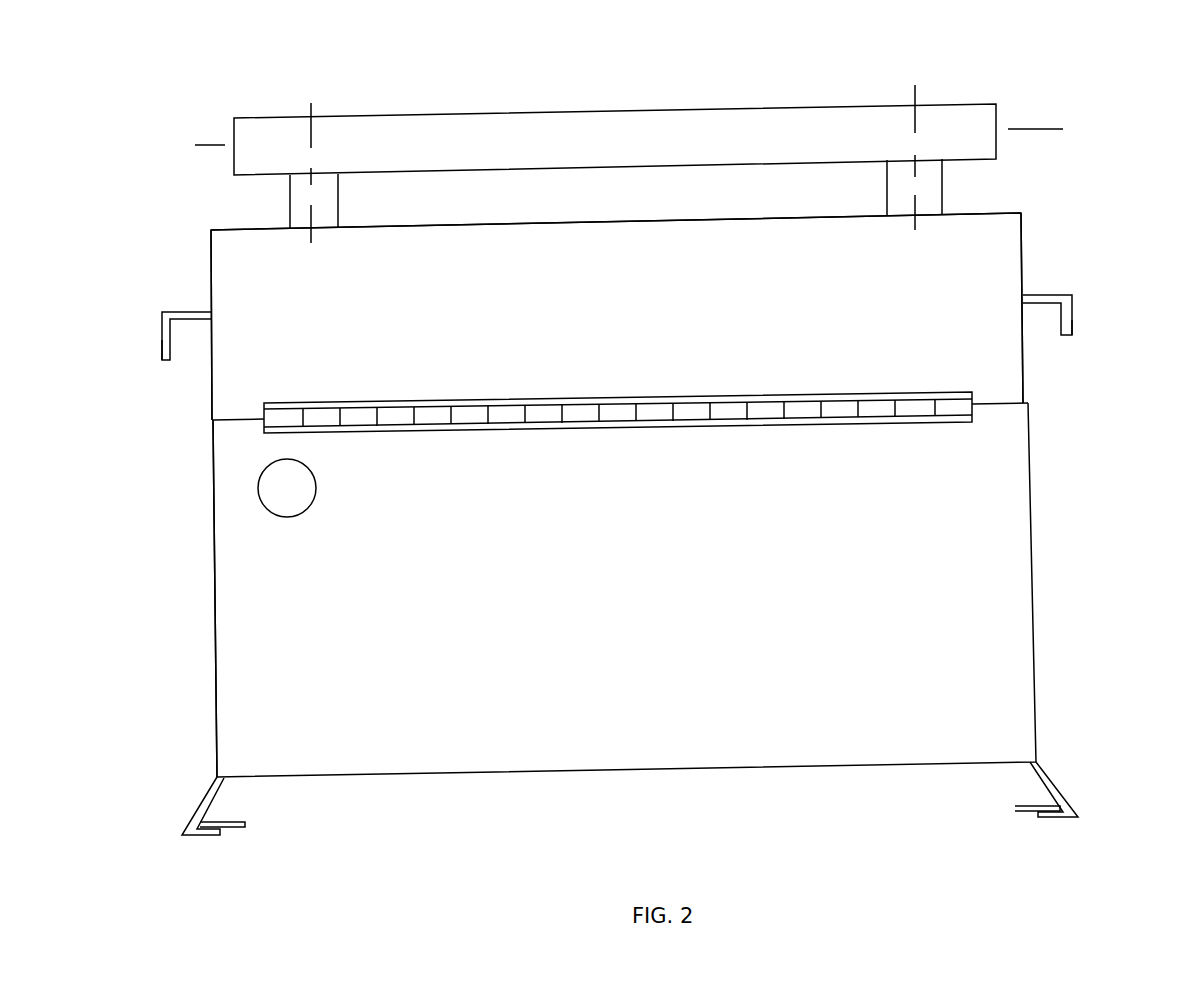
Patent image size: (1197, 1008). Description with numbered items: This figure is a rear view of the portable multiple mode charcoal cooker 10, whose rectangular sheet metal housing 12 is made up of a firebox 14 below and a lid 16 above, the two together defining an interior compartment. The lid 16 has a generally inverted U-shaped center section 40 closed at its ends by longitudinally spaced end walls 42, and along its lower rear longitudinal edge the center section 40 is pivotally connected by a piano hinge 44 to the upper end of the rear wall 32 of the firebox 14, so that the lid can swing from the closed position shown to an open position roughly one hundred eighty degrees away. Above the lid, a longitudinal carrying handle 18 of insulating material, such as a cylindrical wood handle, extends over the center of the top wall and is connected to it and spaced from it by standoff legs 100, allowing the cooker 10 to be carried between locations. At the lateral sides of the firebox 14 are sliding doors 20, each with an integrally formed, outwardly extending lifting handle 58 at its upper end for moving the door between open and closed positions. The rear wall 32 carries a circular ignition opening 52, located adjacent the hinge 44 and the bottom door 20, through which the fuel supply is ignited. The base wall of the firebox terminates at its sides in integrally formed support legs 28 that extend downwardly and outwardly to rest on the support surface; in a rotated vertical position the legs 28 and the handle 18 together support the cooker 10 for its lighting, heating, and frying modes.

The portable multiple mode charcoal cooker 10 is at (1070, 452).
The rectangular sheet metal housing 12 is at (208, 574).
The firebox 14 is at (217, 710).
The lid 16 is at (232, 227).
The longitudinal carrying handle 18 is at (417, 128).
The sliding doors 20 is at (162, 312).
The support legs 28 is at (198, 808).
The rear wall 32 is at (624, 590).
The center section 40 is at (617, 316).
The end walls 42 is at (212, 272).
The piano hinge 44 is at (558, 397).
The circular ignition opening 52 is at (298, 495).
The lifting handles 58 is at (163, 355).
The standoff legs 100 is at (902, 193).